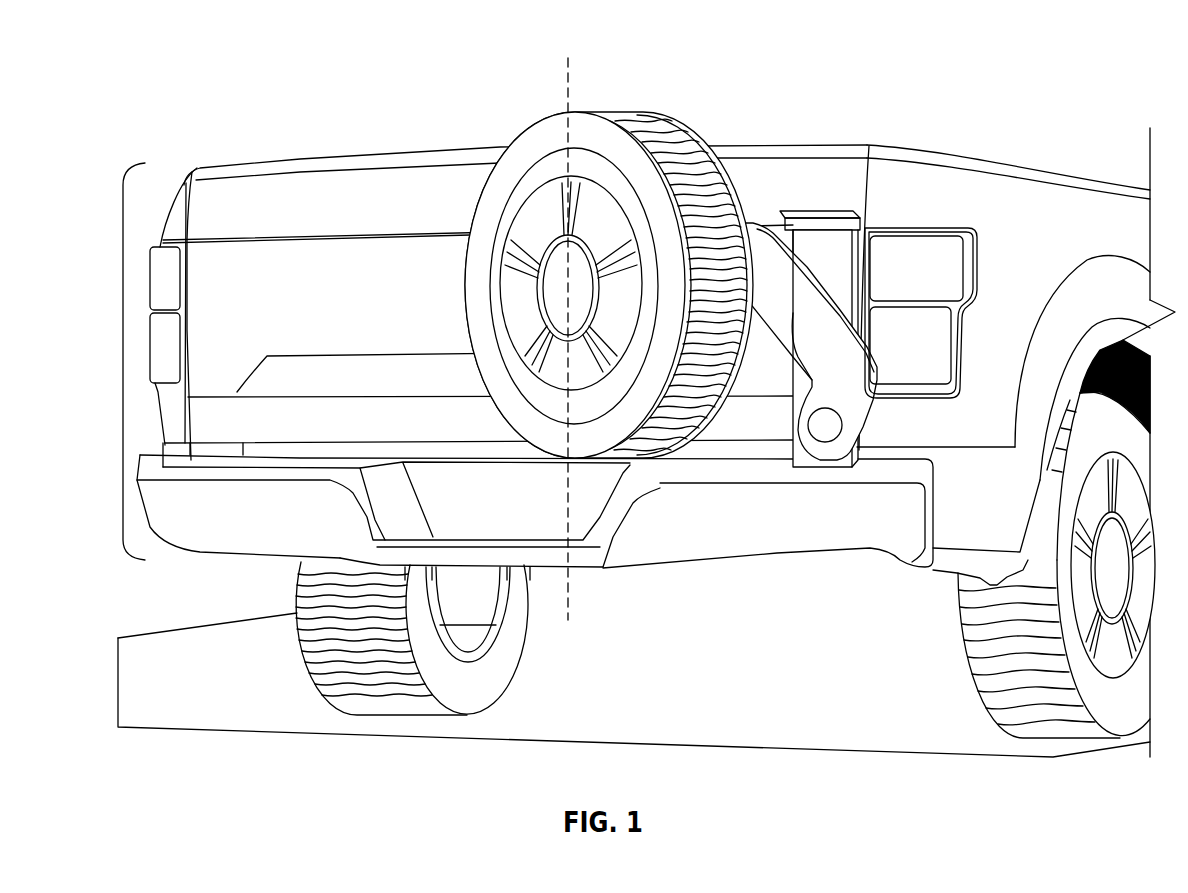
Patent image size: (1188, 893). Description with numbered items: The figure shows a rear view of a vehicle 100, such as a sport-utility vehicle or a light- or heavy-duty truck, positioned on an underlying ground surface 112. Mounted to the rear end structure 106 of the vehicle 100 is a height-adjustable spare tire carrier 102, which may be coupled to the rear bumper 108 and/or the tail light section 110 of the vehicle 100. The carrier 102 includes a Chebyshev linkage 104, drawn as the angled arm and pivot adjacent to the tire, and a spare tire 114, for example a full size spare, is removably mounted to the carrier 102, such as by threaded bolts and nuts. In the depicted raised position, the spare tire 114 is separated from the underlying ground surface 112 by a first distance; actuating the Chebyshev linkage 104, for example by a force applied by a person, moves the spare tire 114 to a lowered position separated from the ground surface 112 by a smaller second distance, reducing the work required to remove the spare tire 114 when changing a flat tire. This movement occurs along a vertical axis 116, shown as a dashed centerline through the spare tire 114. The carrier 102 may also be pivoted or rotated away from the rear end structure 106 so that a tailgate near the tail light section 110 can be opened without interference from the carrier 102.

The vehicle 100 is at (318, 42).
The height-adjustable spare tire carrier 102 is at (806, 320).
The Chebyshev linkage 104 is at (793, 353).
The rear end structure 106 is at (123, 360).
The rear bumper 108 is at (767, 525).
The tail light section 110 is at (891, 398).
The underlying ground surface 112 is at (737, 712).
The spare tire 114 is at (643, 110).
The vertical axis 116 is at (568, 72).